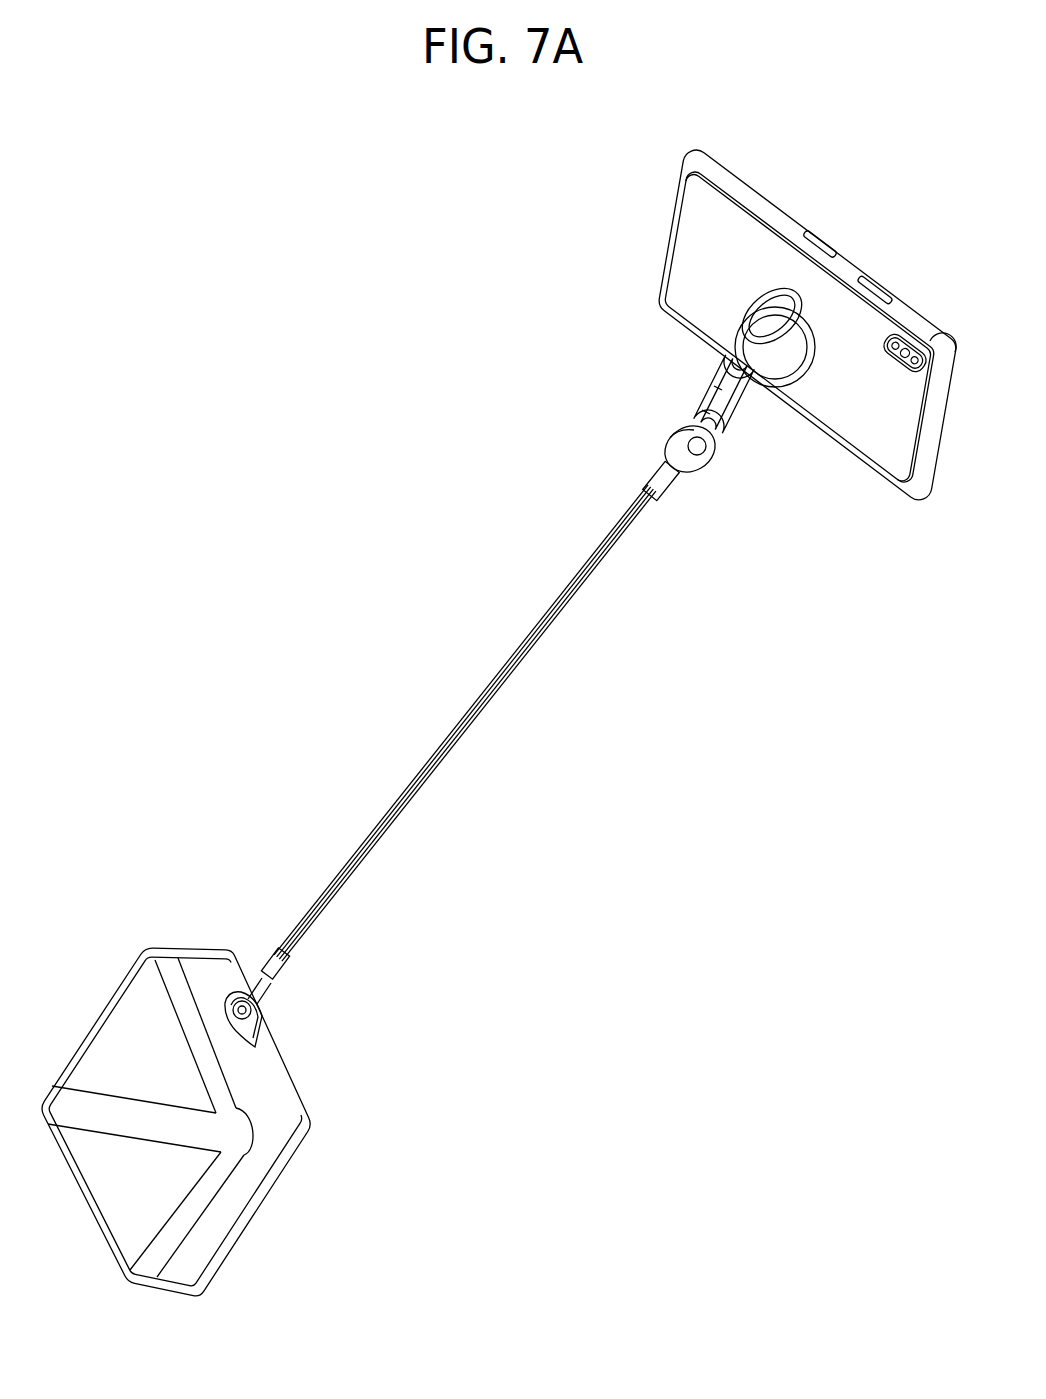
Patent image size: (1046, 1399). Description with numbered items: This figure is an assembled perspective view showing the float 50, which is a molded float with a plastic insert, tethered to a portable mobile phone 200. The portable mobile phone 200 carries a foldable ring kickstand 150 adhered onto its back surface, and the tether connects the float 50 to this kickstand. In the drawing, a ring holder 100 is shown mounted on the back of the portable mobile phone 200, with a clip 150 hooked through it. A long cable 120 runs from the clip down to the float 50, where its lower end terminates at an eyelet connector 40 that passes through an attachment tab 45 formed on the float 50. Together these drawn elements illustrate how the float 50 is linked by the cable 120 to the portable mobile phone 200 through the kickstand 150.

The portable mobile phone 200 is at (807, 297).
The ring holder 100 is at (701, 297).
The foldable ring kickstand 150 is at (736, 469).
The tether cable 120 is at (453, 750).
The eyelet connector 40 is at (245, 1004).
The attachment tab 45 is at (248, 1023).
The float 50 is at (257, 1122).